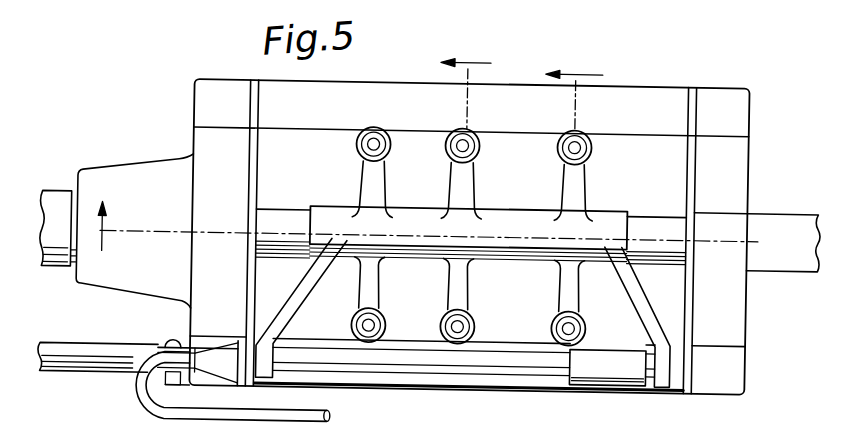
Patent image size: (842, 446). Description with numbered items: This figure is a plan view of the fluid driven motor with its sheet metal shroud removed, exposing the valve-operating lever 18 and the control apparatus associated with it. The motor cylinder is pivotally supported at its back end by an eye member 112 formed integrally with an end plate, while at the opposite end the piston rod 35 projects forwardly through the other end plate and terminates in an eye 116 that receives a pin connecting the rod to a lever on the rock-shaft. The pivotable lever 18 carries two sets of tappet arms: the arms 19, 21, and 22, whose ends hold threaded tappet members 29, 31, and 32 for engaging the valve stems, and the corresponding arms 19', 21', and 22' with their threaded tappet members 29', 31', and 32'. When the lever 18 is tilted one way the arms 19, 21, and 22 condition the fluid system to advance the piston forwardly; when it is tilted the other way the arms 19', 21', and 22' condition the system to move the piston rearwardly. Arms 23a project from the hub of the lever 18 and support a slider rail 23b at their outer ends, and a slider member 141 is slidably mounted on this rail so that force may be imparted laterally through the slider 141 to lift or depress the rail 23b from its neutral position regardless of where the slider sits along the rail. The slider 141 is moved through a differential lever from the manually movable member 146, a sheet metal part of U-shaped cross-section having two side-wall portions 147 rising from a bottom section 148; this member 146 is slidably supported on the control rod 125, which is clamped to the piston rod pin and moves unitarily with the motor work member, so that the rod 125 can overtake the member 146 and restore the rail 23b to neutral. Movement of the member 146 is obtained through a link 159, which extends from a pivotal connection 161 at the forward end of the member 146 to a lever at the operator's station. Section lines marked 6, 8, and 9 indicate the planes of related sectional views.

The piston rod eye 116 is at (50, 198).
The piston rod 35 is at (81, 205).
The section line 6 is at (95, 225).
The section line 9 is at (466, 84).
The section line 8 is at (574, 92).
The threaded tappet member 32 is at (358, 146).
The threaded tappet member 31 is at (446, 148).
The threaded tappet member 29 is at (557, 149).
The tappet arm 22 is at (359, 188).
The tappet arm 21 is at (447, 190).
The tappet arm 19 is at (556, 192).
The valve-operating lever 18 is at (494, 226).
The eye member 112 is at (798, 212).
The arms 23a is at (294, 300).
The slider rail 23b is at (313, 350).
The tappet arm 19' is at (384, 283).
The tappet arm 21' is at (472, 284).
The tappet arm 22' is at (580, 286).
The threaded tappet member 29' is at (387, 322).
The threaded tappet member 31' is at (477, 325).
The threaded tappet member 32' is at (586, 328).
The slider member 141 is at (602, 387).
The manually movable member 146 is at (479, 383).
The side-wall portions 147 is at (407, 340).
The bottom section 148 is at (427, 378).
The link 159 is at (270, 414).
The pivotal connection 161 is at (168, 337).
The control rod 125 is at (83, 356).